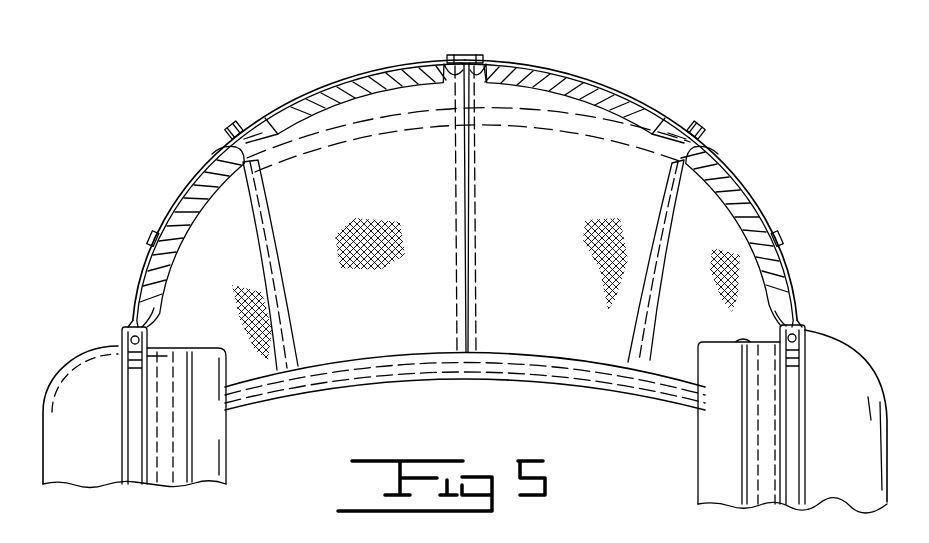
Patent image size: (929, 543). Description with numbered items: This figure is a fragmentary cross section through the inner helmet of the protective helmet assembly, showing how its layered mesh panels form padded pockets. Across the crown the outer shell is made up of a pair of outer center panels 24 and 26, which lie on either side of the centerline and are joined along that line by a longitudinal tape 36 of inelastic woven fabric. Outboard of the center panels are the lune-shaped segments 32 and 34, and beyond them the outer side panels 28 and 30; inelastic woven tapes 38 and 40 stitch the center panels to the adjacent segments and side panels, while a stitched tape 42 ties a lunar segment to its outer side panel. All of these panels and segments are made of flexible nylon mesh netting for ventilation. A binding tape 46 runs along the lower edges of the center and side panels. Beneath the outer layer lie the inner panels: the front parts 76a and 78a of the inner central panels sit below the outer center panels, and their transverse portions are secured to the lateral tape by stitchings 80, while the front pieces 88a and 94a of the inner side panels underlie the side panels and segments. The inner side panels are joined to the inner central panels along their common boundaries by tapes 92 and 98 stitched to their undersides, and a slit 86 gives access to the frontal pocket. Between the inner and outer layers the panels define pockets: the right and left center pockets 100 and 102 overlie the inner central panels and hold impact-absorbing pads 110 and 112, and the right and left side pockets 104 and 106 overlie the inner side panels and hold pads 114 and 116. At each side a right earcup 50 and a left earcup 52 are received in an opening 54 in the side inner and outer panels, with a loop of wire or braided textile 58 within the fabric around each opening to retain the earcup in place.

The outer center panel 24 is at (560, 80).
The outer center panel 26 is at (407, 62).
The outer side panel 28 is at (795, 298).
The outer side panel 30 is at (130, 300).
The lune-shaped segment 32 is at (735, 175).
The lune-shaped segment 34 is at (183, 198).
The longitudinal tape 36 is at (467, 55).
The inelastic woven tape 38 is at (705, 138).
The inelastic woven tape 40 is at (236, 132).
The stitched tape 42 is at (775, 243).
The binding tape 46 is at (520, 375).
The right earcup 50 is at (858, 488).
The left earcup 52 is at (70, 372).
The opening 54 is at (818, 346).
The loop of wire or braided textile 58 is at (126, 328).
The front part of inner central panel 76a is at (590, 354).
The front part of inner central panel 78a is at (400, 350).
The stitchings 80 is at (557, 133).
The slit 86 is at (468, 282).
The front piece of inner side panel 88a is at (678, 362).
The tape 92 is at (628, 340).
The fore piece of inner side panel 94a is at (252, 367).
The tape 98 is at (297, 345).
The right center pocket 100 is at (650, 115).
The left center pocket 102 is at (273, 110).
The right side pocket 104 is at (794, 304).
The left side pocket 106 is at (188, 188).
The impact-absorbing pad 110 is at (605, 92).
The impact-absorbing pad 112 is at (340, 82).
The impact-absorbing pad 114 is at (742, 203).
The impact-absorbing pad 116 is at (205, 172).